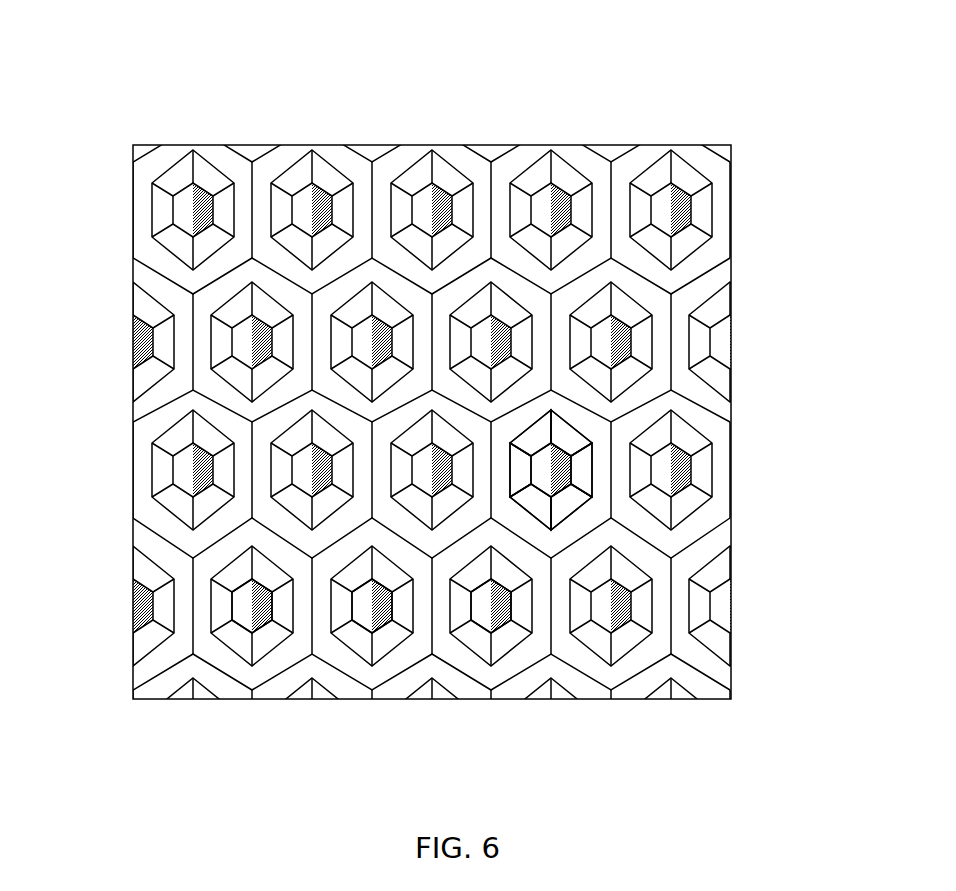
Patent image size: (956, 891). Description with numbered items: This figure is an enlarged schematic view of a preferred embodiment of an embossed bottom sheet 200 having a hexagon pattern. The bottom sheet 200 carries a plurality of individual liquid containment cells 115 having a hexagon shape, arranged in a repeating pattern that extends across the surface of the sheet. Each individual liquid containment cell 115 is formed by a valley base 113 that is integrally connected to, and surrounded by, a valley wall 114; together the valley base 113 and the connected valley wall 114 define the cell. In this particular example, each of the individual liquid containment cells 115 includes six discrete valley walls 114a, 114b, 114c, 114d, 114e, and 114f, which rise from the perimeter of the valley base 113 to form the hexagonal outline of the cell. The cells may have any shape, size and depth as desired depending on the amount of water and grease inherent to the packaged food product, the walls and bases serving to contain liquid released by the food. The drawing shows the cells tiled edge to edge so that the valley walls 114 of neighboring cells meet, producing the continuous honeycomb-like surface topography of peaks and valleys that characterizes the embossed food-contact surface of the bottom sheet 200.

The bottom sheet 200 is at (445, 112).
The valley base 113 is at (192, 458).
The valley wall 114 is at (238, 573).
The first discrete valley wall 114a is at (542, 503).
The second discrete valley wall 114b is at (572, 502).
The third discrete valley wall 114c is at (582, 468).
The fourth discrete valley wall 114d is at (572, 433).
The fifth discrete valley wall 114e is at (532, 438).
The sixth discrete valley wall 114f is at (523, 477).
The individual liquid containment cell 115 is at (483, 625).